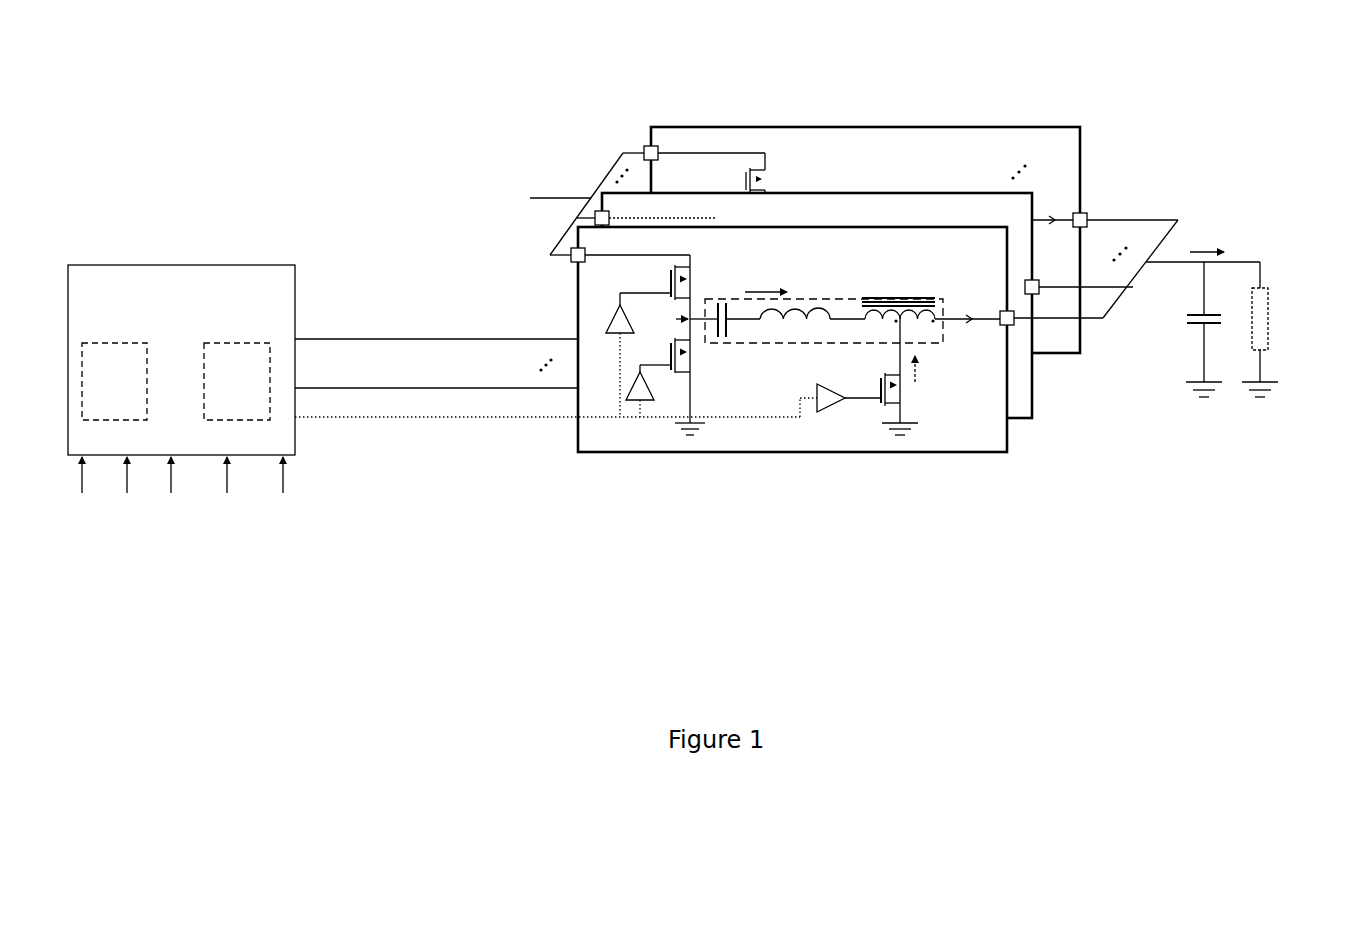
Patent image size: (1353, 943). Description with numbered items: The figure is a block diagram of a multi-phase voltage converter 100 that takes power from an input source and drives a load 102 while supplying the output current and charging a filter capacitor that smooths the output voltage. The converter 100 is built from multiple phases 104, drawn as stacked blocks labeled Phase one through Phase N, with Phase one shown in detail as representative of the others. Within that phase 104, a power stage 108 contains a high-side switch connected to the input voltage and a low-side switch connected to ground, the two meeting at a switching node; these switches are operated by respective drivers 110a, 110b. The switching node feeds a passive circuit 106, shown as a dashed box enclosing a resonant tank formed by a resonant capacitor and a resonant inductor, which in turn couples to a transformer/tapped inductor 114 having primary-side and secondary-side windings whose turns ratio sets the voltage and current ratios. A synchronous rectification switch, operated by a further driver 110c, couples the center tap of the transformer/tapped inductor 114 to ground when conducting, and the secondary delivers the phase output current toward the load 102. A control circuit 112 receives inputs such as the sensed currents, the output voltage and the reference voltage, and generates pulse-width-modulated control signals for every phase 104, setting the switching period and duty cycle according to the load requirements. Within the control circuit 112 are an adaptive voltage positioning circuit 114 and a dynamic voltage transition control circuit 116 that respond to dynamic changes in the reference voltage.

The multi-phase voltage converter 100 is at (323, 57).
The load 102 is at (1266, 288).
The phase 104 is at (828, 289).
The passive circuit 106 is at (835, 297).
The power stage 108 is at (632, 434).
The driver 110a is at (611, 318).
The driver 110b is at (647, 396).
The driver 110c is at (848, 384).
The control circuit 112 is at (181, 392).
The transformer/tapped inductor 114 is at (922, 292).
The dynamic voltage transition (DVID) control circuit 116 is at (114, 381).